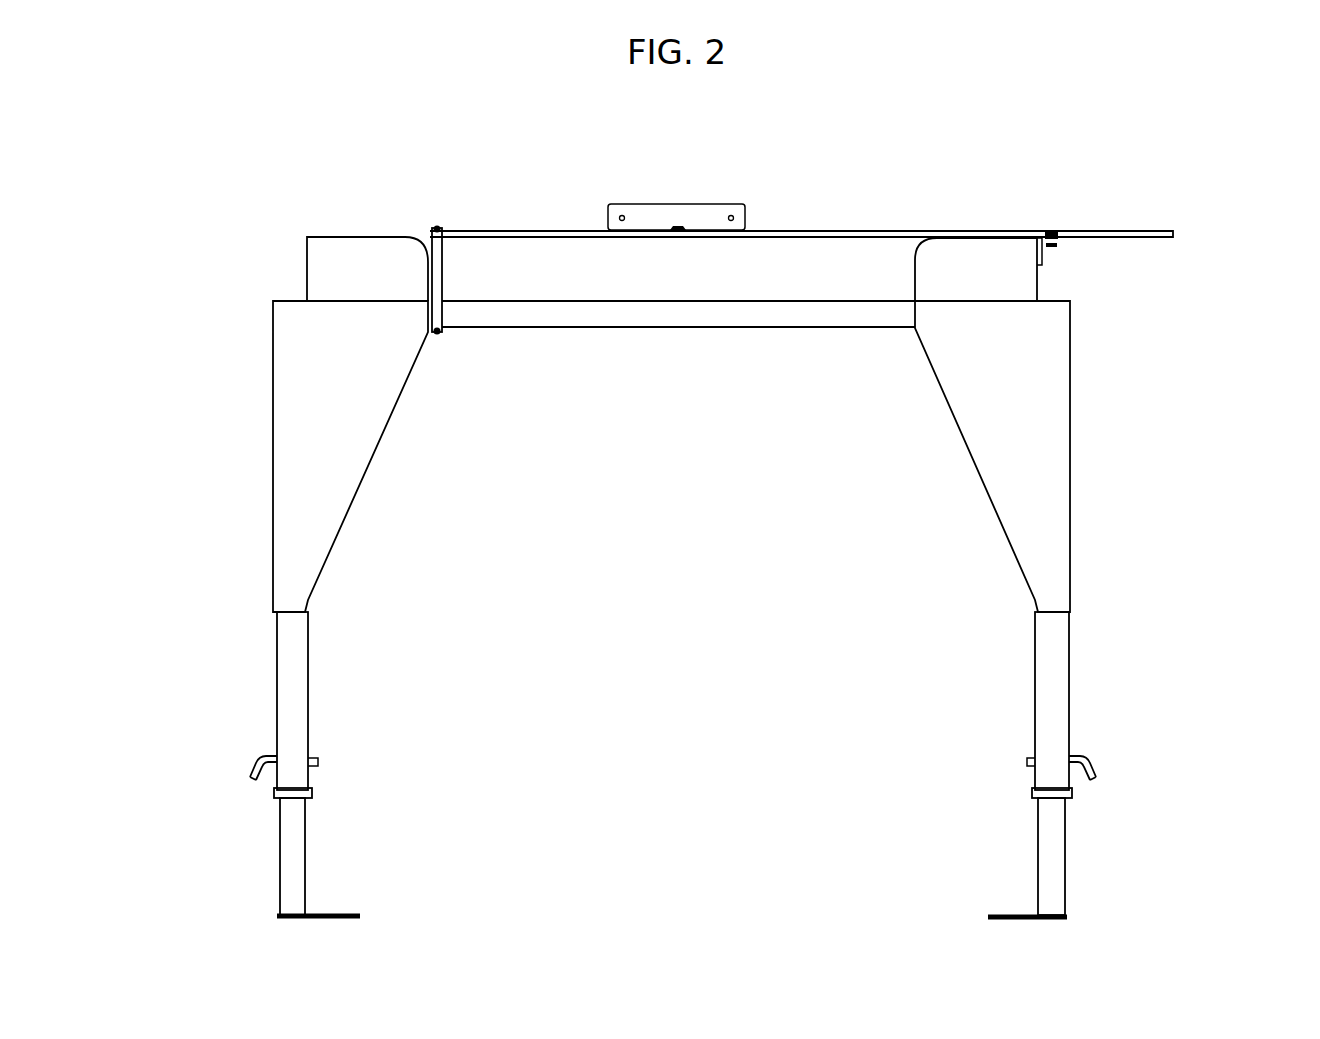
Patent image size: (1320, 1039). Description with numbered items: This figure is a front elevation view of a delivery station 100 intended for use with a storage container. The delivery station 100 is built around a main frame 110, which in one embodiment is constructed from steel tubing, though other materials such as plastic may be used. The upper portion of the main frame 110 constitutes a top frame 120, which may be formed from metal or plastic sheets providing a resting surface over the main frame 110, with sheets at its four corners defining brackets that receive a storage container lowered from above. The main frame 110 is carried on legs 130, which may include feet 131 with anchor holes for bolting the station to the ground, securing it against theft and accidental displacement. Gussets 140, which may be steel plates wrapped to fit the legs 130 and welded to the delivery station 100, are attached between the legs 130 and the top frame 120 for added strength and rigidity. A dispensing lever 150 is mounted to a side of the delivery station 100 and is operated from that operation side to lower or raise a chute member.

The delivery station 100 is at (1133, 133).
The main frame 110 is at (628, 328).
The top frame 120 is at (433, 230).
The legs 130 is at (1067, 865).
The feet 131 is at (987, 915).
The gussets 140 is at (275, 437).
The dispensing lever 150 is at (905, 231).